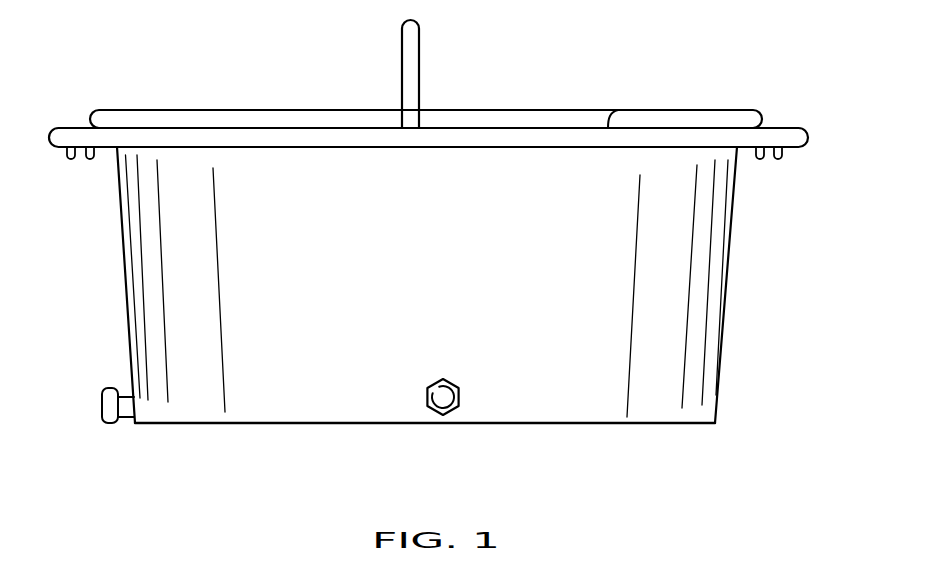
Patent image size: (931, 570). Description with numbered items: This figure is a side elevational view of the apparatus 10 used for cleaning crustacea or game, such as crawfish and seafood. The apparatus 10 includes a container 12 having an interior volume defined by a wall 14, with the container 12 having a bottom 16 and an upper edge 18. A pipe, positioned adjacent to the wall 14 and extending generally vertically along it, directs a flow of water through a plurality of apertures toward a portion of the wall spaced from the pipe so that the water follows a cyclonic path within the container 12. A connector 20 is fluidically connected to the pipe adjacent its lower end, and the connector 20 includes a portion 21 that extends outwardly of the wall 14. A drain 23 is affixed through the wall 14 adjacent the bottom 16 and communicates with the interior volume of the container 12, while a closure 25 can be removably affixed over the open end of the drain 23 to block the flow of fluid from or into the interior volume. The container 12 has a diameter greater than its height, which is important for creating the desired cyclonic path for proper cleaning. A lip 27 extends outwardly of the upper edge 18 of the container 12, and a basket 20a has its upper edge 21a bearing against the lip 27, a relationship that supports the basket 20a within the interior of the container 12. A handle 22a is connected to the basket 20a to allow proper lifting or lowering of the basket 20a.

The apparatus 10 is at (442, 250).
The container 12 is at (693, 343).
The wall 14 is at (124, 252).
The bottom 16 is at (603, 424).
The upper edge 18 is at (617, 110).
The connector 20 is at (114, 421).
The basket 20a is at (517, 117).
The portion 21 is at (131, 395).
The upper edge 21a is at (680, 110).
The handle 22a is at (413, 50).
The drain 23 is at (461, 383).
The closure 25 is at (441, 388).
The lip 27 is at (793, 133).